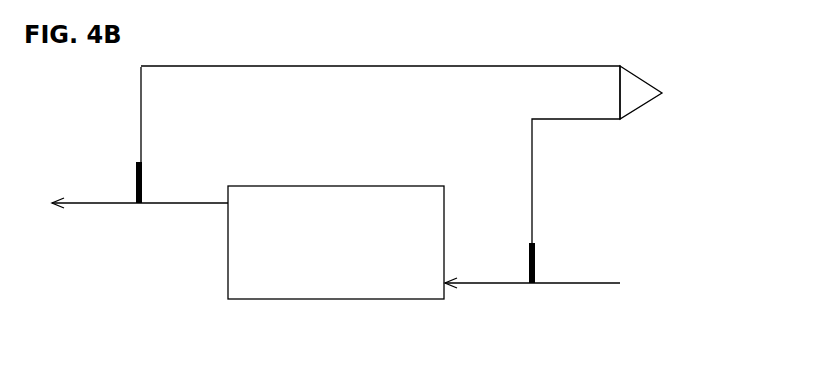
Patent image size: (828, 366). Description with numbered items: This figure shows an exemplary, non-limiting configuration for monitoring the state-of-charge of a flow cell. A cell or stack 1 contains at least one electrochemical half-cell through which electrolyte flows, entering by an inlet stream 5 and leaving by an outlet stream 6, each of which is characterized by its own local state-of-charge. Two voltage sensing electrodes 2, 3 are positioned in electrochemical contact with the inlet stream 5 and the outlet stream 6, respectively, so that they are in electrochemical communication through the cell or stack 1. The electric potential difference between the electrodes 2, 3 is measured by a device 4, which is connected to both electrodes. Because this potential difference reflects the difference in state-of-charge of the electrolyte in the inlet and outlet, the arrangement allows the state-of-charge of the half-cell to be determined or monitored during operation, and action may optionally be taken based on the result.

The cell or stack 1 is at (336, 220).
The voltage sensing electrode 2 is at (547, 257).
The voltage sensing electrode 3 is at (126, 135).
The device 4 is at (427, 154).
The inlet stream 5 is at (532, 300).
The outlet stream 6 is at (140, 221).